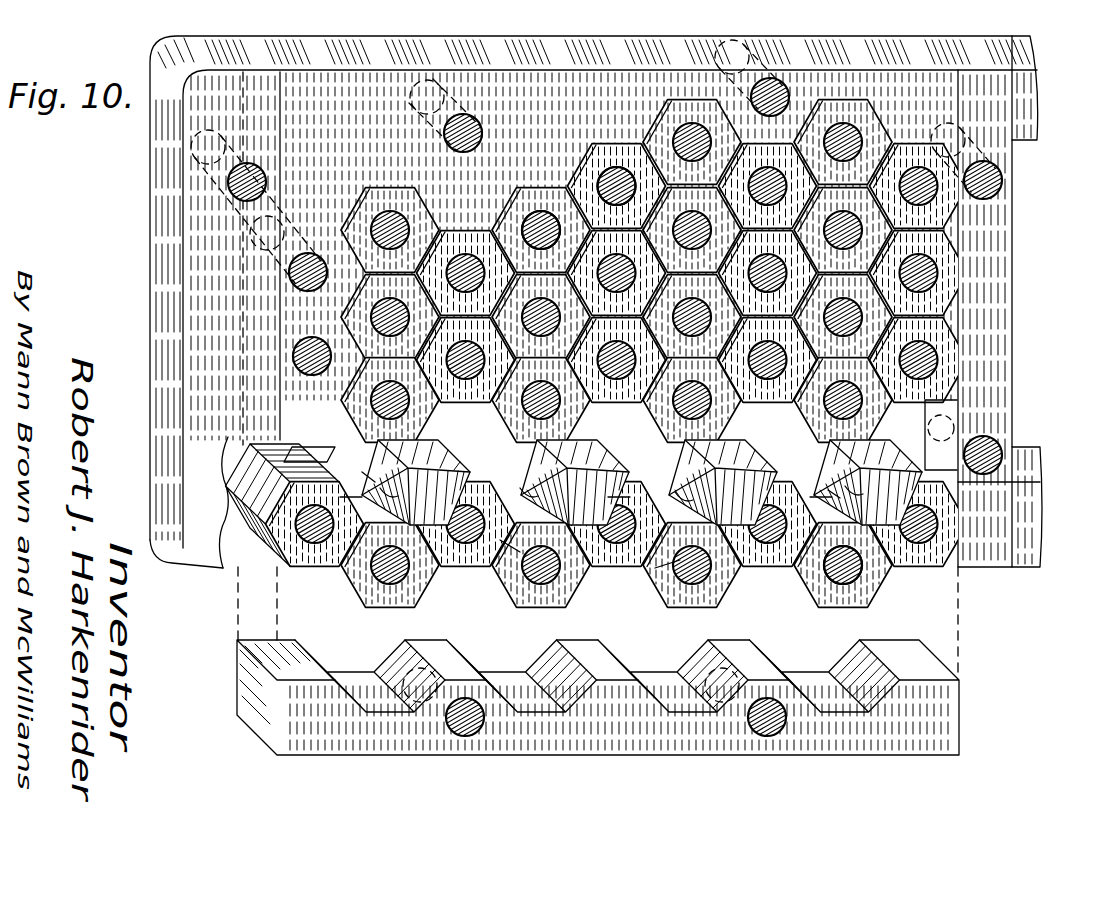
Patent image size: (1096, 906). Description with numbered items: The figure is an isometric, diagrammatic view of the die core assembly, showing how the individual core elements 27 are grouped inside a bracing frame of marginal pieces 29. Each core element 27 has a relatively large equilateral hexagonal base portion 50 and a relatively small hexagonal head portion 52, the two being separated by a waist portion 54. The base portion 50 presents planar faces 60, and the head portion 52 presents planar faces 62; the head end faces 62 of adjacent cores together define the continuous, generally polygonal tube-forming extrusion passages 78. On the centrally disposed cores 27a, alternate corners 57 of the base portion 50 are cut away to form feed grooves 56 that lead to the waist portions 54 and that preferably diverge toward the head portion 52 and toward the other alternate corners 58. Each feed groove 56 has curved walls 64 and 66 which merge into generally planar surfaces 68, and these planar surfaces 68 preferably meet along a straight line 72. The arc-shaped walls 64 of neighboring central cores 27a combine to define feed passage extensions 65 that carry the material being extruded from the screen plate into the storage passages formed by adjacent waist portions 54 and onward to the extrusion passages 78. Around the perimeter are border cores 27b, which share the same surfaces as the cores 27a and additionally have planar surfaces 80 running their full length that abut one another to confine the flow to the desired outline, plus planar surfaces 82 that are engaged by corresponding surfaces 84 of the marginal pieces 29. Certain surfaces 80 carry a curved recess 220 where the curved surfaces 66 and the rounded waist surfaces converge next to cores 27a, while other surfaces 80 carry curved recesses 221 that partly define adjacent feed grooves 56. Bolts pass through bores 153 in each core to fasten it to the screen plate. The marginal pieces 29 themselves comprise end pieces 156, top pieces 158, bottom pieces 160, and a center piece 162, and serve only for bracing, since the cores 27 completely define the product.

The core elements 27 is at (267, 271).
The central cores 27a is at (742, 320).
The border cores 27b is at (385, 190).
The marginal pieces 29 is at (159, 149).
The base portion 50 is at (445, 448).
The head portion 52 is at (500, 468).
The waist portion 54 is at (450, 512).
The feed grooves 56 is at (360, 503).
The alternate corners 57 is at (390, 565).
The other alternate corners 58 is at (420, 460).
The planar faces of the base portion 60 is at (385, 448).
The planar faces of the head portion 62 is at (535, 402).
The curved walls 64 is at (362, 472).
The feed passage extensions 65 is at (380, 488).
The curved walls 66 is at (525, 550).
The planar surfaces 68 is at (690, 546).
The straight line 72 is at (572, 506).
The extrusion passages 78 is at (745, 318).
The planar surfaces of border cores 80 is at (255, 445).
The planar surfaces of border cores 82 is at (248, 512).
The surfaces of marginal pieces 84 is at (300, 346).
The bores 153 is at (612, 176).
The end pieces 156 is at (192, 317).
The top pieces 158 is at (642, 40).
The bottom pieces 160 is at (346, 756).
The center piece 162 is at (1012, 305).
The curved recess 220 is at (1040, 468).
The curved recesses 221 is at (300, 448).